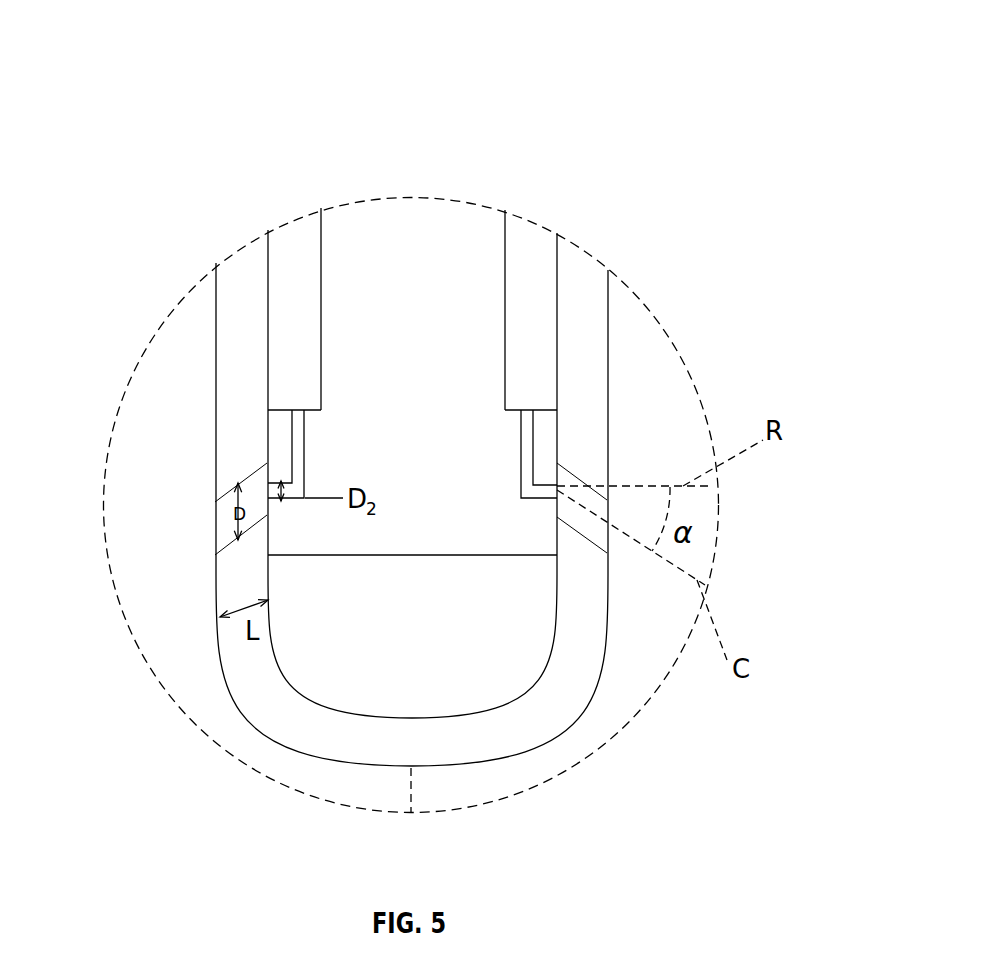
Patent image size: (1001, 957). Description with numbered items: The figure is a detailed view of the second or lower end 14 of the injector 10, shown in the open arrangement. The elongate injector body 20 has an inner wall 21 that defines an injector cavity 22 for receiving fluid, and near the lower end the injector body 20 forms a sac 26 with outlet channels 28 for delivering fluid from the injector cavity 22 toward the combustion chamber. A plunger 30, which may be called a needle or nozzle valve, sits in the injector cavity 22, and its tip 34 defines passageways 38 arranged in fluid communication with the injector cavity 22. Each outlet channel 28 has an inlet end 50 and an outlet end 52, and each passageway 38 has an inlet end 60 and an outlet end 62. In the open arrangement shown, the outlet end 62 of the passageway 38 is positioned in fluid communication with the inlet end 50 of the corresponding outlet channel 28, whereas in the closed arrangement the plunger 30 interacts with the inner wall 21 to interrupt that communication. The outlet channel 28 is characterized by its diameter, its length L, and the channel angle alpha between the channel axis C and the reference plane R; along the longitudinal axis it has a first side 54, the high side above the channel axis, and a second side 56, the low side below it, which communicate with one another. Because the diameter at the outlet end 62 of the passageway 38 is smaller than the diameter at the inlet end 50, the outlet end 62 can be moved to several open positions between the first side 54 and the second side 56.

The injector 10 is at (596, 73).
The second or lower end 14 is at (157, 763).
The injector body 20 is at (579, 310).
The inner wall 21 is at (276, 245).
The injector cavity 22 is at (519, 253).
The sac 26 is at (475, 630).
The outlet channel 28 is at (230, 520).
The plunger 30 is at (375, 245).
The tip 34 is at (267, 425).
The passageway 38 is at (523, 395).
The inlet end 50 is at (268, 513).
The outlet end 52 is at (213, 503).
The first side 54 is at (564, 483).
The second side 56 is at (597, 530).
The inlet end 60 is at (288, 400).
The outlet end 62 is at (267, 493).